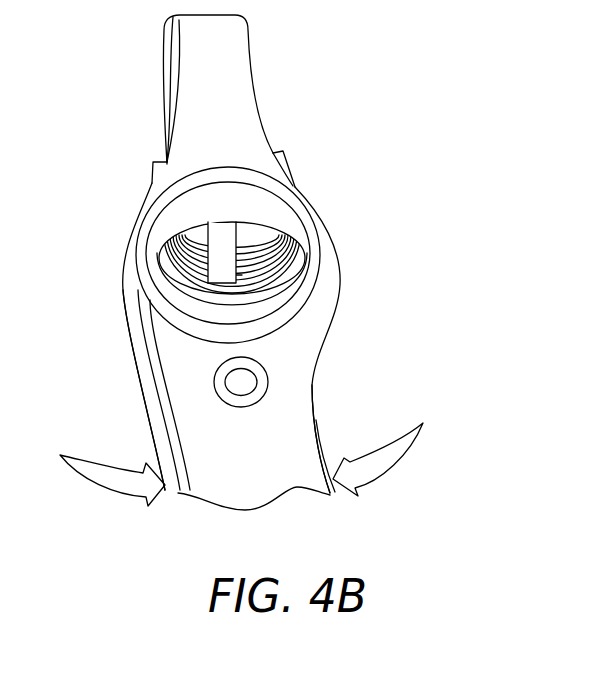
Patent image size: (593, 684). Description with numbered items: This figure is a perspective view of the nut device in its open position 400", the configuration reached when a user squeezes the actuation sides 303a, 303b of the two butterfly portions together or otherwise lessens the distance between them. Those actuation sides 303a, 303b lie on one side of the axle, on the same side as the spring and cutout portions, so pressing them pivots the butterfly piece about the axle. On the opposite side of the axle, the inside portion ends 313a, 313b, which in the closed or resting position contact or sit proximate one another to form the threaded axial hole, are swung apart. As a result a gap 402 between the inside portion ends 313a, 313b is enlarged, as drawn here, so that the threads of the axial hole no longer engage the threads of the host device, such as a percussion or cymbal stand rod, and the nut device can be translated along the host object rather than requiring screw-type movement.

The open position 400 is at (313, 77).
The gap 402 is at (222, 238).
The inside portion end 313a is at (250, 227).
The inside portion end 313b is at (197, 232).
The actuation side 303a is at (331, 488).
The actuation side 303b is at (167, 493).